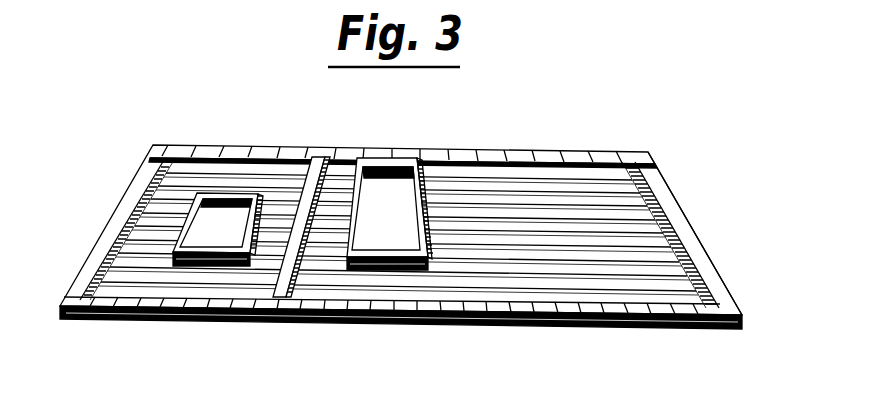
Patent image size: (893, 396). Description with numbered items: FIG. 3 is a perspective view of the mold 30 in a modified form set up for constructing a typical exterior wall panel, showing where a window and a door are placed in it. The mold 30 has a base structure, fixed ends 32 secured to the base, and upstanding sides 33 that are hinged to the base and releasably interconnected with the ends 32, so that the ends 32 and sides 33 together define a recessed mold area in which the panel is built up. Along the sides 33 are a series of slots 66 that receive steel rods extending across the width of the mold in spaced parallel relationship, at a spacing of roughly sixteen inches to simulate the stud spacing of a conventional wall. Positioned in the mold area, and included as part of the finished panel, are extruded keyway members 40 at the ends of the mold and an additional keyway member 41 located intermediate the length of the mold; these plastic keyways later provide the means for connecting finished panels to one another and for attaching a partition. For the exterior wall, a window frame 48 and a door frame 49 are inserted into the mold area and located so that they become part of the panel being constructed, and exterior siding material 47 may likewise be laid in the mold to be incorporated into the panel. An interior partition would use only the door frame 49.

The mold 30 is at (113, 212).
The fixed ends 32 is at (688, 222).
The upstanding sides 33 is at (505, 153).
The extruded keyway members 40 is at (146, 187).
The intermediate keyway member 41 is at (327, 152).
The exterior siding material 47 is at (712, 263).
The window frame 48 is at (228, 196).
The door frame 49 is at (410, 189).
The slots 66 is at (222, 152).